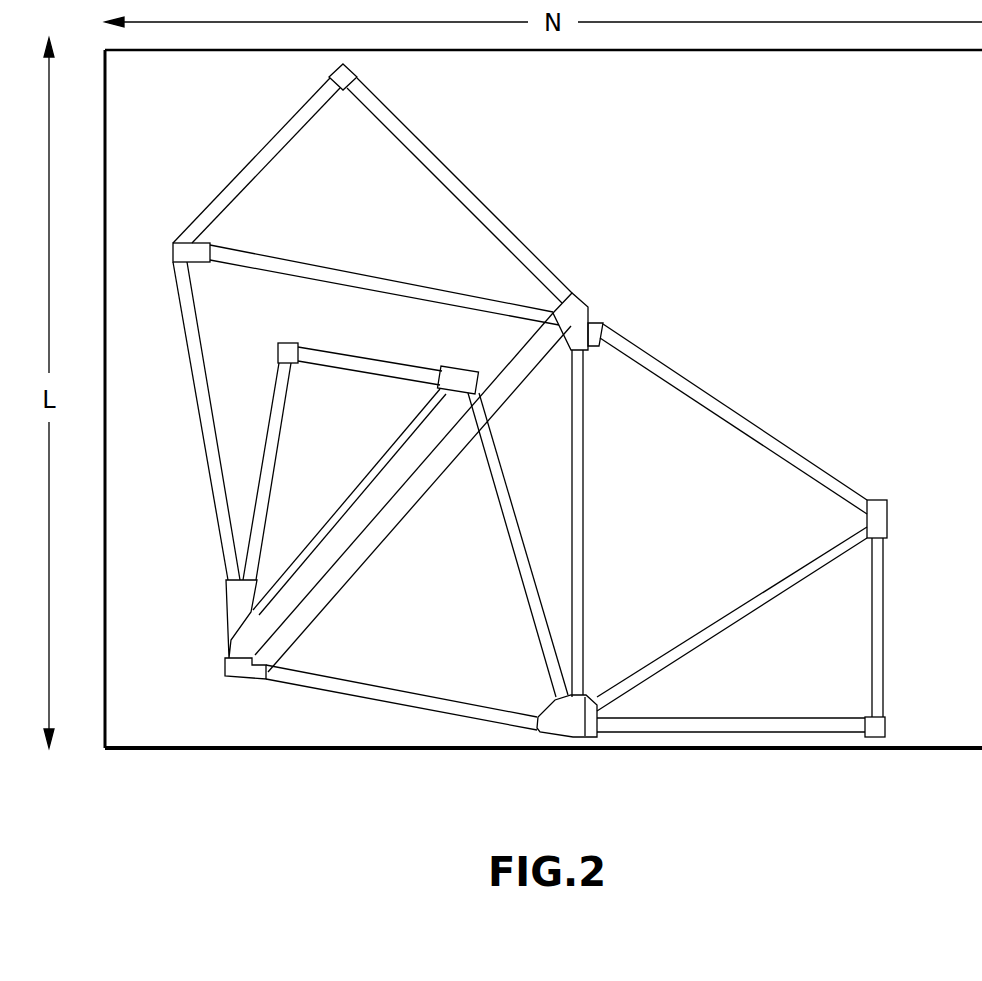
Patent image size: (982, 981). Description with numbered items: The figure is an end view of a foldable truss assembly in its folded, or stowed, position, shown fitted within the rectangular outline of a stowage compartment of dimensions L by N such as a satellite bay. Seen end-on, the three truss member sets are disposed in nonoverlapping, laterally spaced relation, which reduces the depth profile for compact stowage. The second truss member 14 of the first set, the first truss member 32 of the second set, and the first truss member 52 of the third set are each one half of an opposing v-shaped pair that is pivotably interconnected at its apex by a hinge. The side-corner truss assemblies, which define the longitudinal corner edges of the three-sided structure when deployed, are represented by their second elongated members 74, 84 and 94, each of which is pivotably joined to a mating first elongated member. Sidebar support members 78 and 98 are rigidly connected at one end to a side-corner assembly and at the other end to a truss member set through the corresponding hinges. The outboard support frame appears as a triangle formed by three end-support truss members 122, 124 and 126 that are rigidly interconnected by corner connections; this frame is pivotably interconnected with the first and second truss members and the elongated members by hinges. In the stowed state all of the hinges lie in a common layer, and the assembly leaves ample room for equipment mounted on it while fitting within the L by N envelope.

The second truss member 14 is at (785, 448).
The first truss member 32 is at (337, 523).
The first truss member 52 is at (250, 258).
The second elongated member 74 is at (749, 727).
The sidebar support member 78 is at (875, 658).
The second elongated member 84 is at (258, 510).
The second elongated member 94 is at (463, 195).
The sidebar support member 98 is at (257, 168).
The end-support truss member 122 is at (575, 502).
The end-support truss member 124 is at (317, 580).
The end-support truss member 126 is at (350, 692).